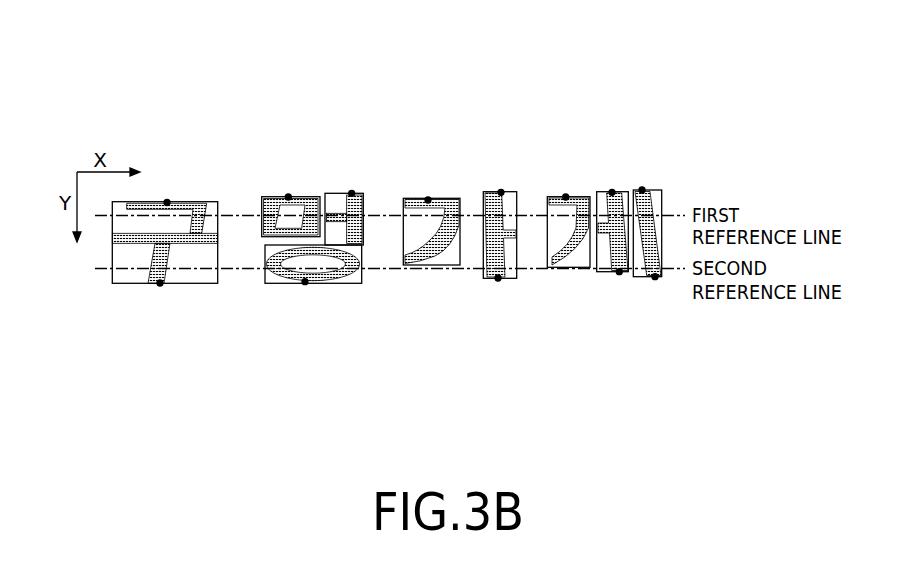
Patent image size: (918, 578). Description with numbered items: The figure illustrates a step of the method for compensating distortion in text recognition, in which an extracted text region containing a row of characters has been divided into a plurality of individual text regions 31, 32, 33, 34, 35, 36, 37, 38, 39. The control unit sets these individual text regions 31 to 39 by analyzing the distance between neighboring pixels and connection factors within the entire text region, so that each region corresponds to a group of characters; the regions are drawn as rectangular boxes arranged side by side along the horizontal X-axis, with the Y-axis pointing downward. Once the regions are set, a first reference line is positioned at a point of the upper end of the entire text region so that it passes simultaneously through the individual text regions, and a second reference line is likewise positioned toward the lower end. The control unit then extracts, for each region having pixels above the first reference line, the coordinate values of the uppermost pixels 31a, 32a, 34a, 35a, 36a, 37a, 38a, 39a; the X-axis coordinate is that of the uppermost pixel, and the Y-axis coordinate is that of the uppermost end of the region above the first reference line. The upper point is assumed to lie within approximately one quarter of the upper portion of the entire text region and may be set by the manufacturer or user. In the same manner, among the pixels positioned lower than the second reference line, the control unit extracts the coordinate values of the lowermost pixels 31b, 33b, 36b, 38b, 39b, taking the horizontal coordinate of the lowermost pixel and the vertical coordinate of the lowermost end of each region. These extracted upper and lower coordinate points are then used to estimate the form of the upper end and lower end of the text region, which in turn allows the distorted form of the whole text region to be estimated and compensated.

The individual text region 31 is at (215, 203).
The uppermost pixel 31a is at (167, 202).
The lowermost pixel 31b is at (160, 283).
The individual text region 32 is at (310, 198).
The uppermost pixel 32a is at (288, 197).
The individual text region 33 is at (338, 283).
The lowermost pixel 33b is at (305, 282).
The individual text region 34 is at (362, 200).
The uppermost pixel 34a is at (352, 193).
The individual text region 35 is at (452, 198).
The uppermost pixel 35a is at (428, 200).
The individual text region 36 is at (516, 195).
The uppermost pixel 36a is at (501, 192).
The lowermost pixel 36b is at (498, 278).
The individual text region 37 is at (589, 197).
The uppermost pixel 37a is at (566, 197).
The individual text region 38 is at (628, 193).
The uppermost pixel 38a is at (612, 192).
The lowermost pixel 38b is at (619, 272).
The individual text region 39 is at (661, 200).
The uppermost pixel 39a is at (642, 190).
The lowermost pixel 39b is at (655, 277).